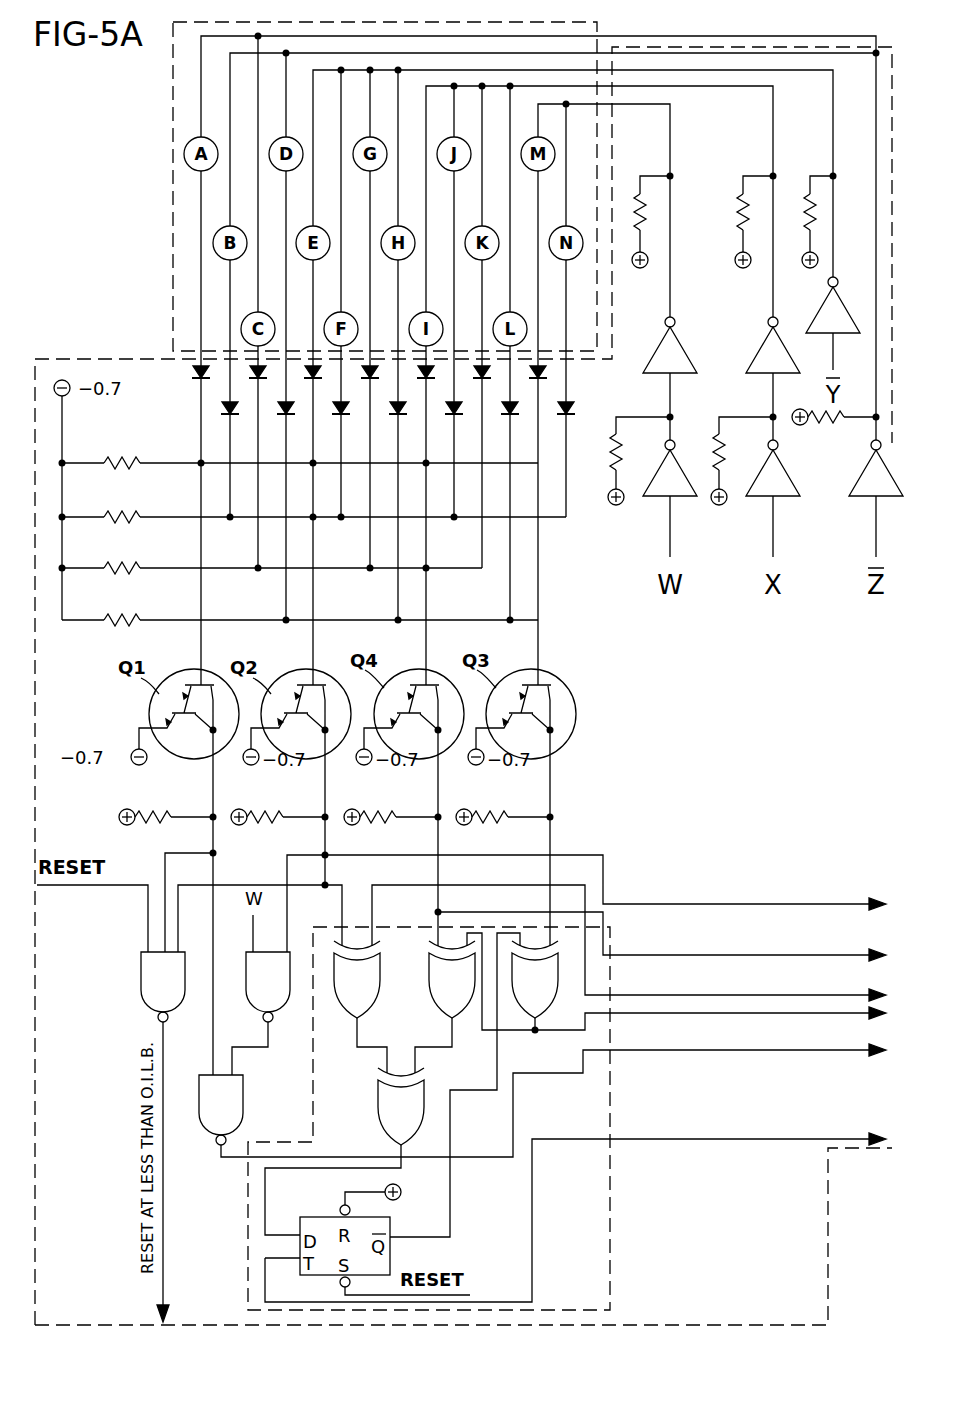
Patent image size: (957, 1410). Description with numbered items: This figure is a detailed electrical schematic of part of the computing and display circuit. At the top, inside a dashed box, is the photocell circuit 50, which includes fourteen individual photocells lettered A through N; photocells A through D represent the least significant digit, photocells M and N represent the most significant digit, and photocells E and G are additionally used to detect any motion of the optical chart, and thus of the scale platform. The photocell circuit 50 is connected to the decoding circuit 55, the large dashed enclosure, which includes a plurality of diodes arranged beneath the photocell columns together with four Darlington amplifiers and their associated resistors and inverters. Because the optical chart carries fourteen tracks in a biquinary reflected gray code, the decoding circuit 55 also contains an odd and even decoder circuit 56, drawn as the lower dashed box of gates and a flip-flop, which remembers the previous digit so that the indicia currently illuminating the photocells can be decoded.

The photocell circuit 50 is at (173, 210).
The decoding circuit 55 is at (104, 358).
The odd and even decoder circuit 56 is at (612, 1168).